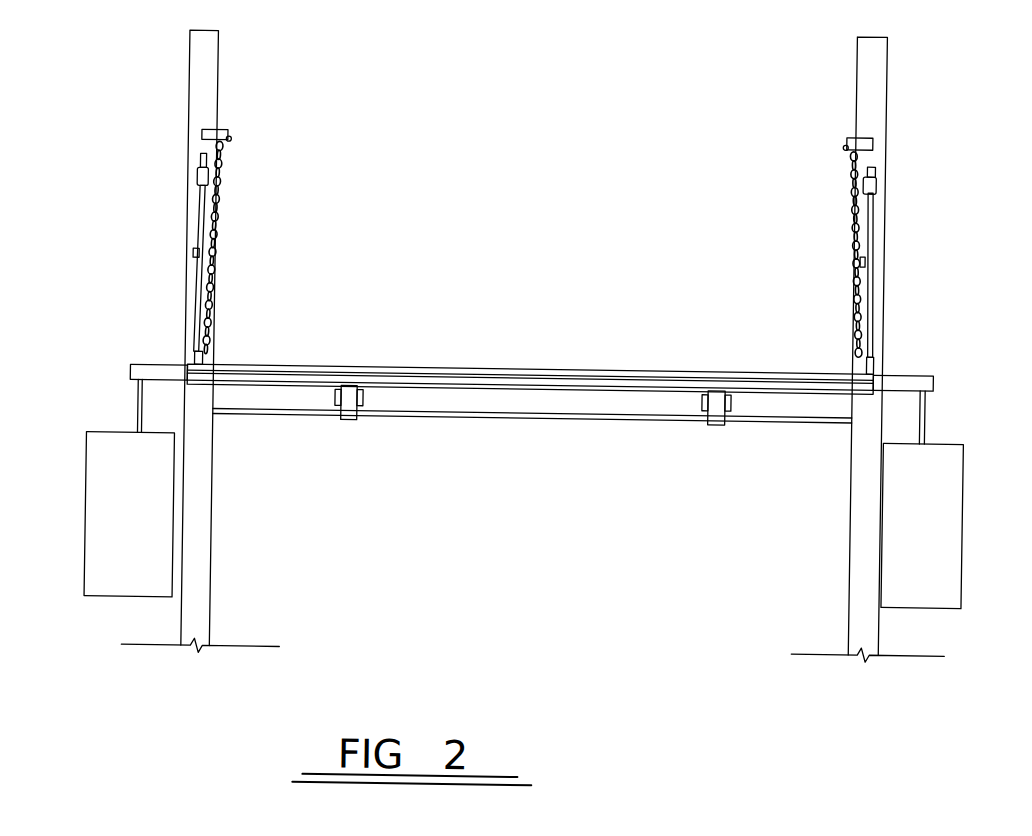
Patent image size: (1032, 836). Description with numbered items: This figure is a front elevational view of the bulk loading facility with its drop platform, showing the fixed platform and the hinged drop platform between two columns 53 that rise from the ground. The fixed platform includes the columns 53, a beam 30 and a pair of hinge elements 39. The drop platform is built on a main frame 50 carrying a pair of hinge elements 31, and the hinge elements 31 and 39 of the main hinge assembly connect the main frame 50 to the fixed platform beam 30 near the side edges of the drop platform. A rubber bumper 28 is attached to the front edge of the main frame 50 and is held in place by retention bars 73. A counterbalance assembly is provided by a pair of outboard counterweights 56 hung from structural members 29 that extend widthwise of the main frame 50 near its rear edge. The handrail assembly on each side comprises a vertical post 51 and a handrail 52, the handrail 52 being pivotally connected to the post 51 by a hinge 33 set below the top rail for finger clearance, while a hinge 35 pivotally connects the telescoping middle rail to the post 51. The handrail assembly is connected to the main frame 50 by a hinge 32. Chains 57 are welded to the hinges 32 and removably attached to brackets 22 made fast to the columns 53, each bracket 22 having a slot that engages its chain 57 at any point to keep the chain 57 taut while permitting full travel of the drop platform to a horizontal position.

The bracket 22 is at (227, 139).
The rubber bumper 28 is at (661, 384).
The structural member 29 is at (129, 377).
The beam 30 is at (612, 420).
The hinge element 31 is at (349, 423).
The hinge 32 is at (193, 362).
The hinge 33 is at (194, 181).
The hinge 35 is at (190, 258).
The hinge element 39 is at (335, 401).
The main frame 50 is at (318, 370).
The vertical post 51 is at (194, 207).
The handrail 52 is at (196, 163).
The column 53 is at (213, 560).
The counterweight 56 is at (87, 495).
The chain 57 is at (211, 313).
The retention bar 73 is at (609, 374).